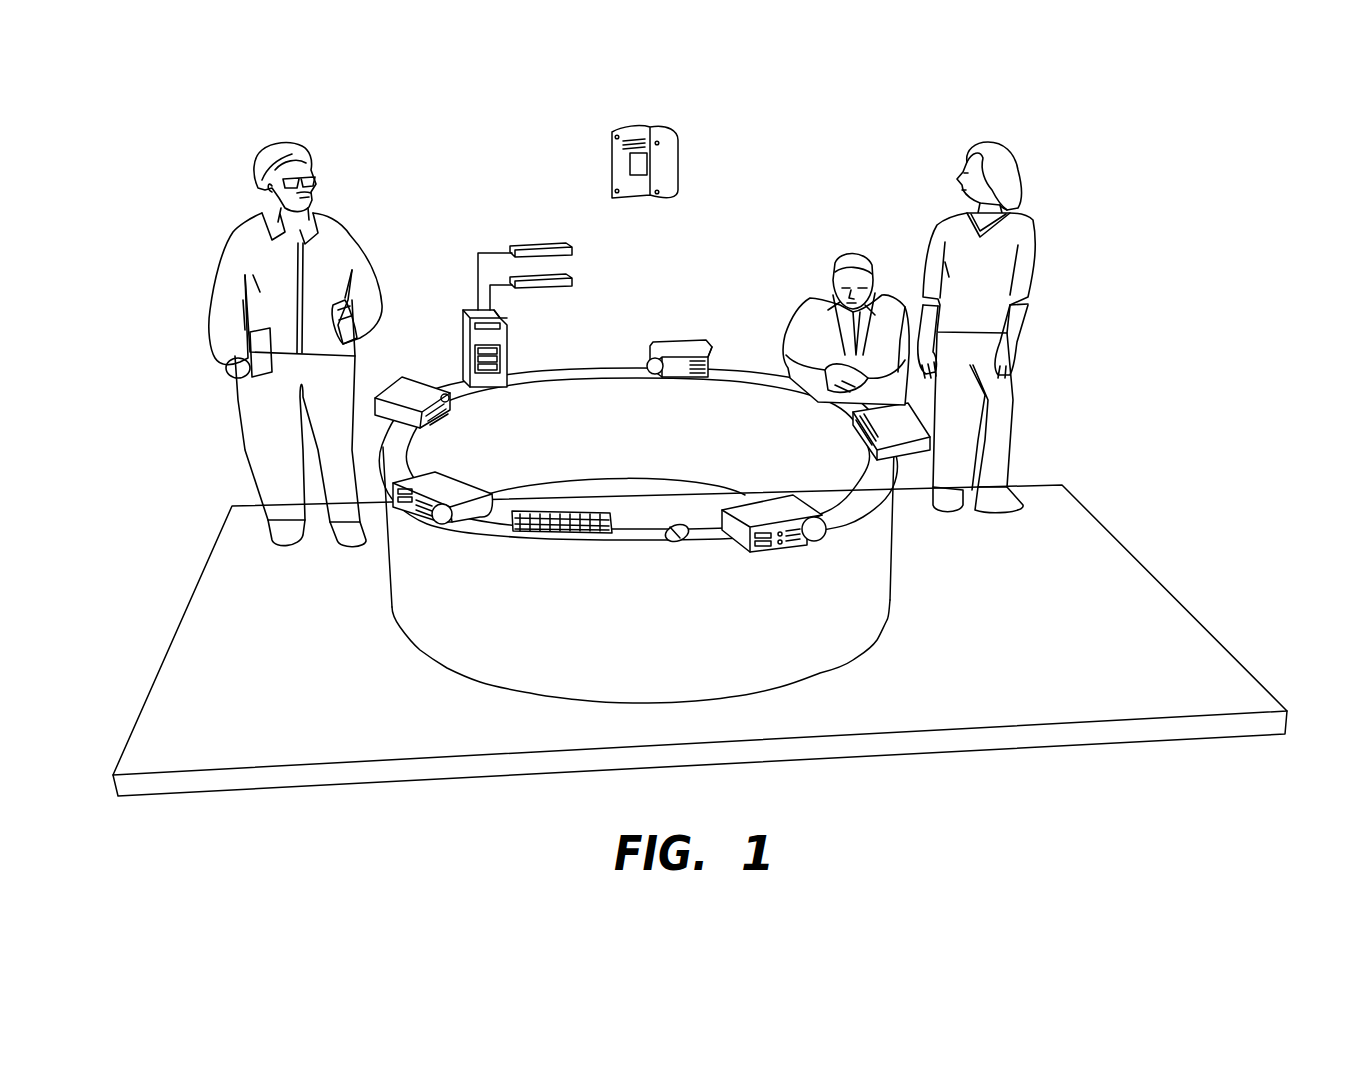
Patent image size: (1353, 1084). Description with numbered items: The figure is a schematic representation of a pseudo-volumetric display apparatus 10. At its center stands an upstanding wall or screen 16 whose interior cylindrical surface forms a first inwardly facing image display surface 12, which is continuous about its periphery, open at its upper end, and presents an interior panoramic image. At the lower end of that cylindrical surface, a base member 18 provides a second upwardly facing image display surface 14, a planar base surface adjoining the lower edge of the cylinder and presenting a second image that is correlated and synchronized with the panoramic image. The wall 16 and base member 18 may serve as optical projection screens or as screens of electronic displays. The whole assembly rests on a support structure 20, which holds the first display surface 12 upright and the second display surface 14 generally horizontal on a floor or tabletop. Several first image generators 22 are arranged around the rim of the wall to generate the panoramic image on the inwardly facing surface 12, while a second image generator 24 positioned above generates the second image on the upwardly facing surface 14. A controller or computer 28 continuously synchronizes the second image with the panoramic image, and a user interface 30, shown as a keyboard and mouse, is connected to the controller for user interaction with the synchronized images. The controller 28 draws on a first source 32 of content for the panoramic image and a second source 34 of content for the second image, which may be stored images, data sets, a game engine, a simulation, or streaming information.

The pseudo-volumetric display apparatus 10 is at (577, 491).
The first inwardly facing image display surface 12 is at (735, 418).
The second upwardly facing image display surface 14 is at (641, 498).
The upstanding wall or screen 16 is at (853, 564).
The base member 18 is at (854, 658).
The support structure 20 is at (240, 628).
The first image generator 22 is at (410, 387).
The second image generator 24 is at (672, 151).
The controller or computer 28 is at (507, 333).
The user interface 30 is at (568, 534).
The first source of content 32 is at (570, 247).
The second source of content 34 is at (570, 280).